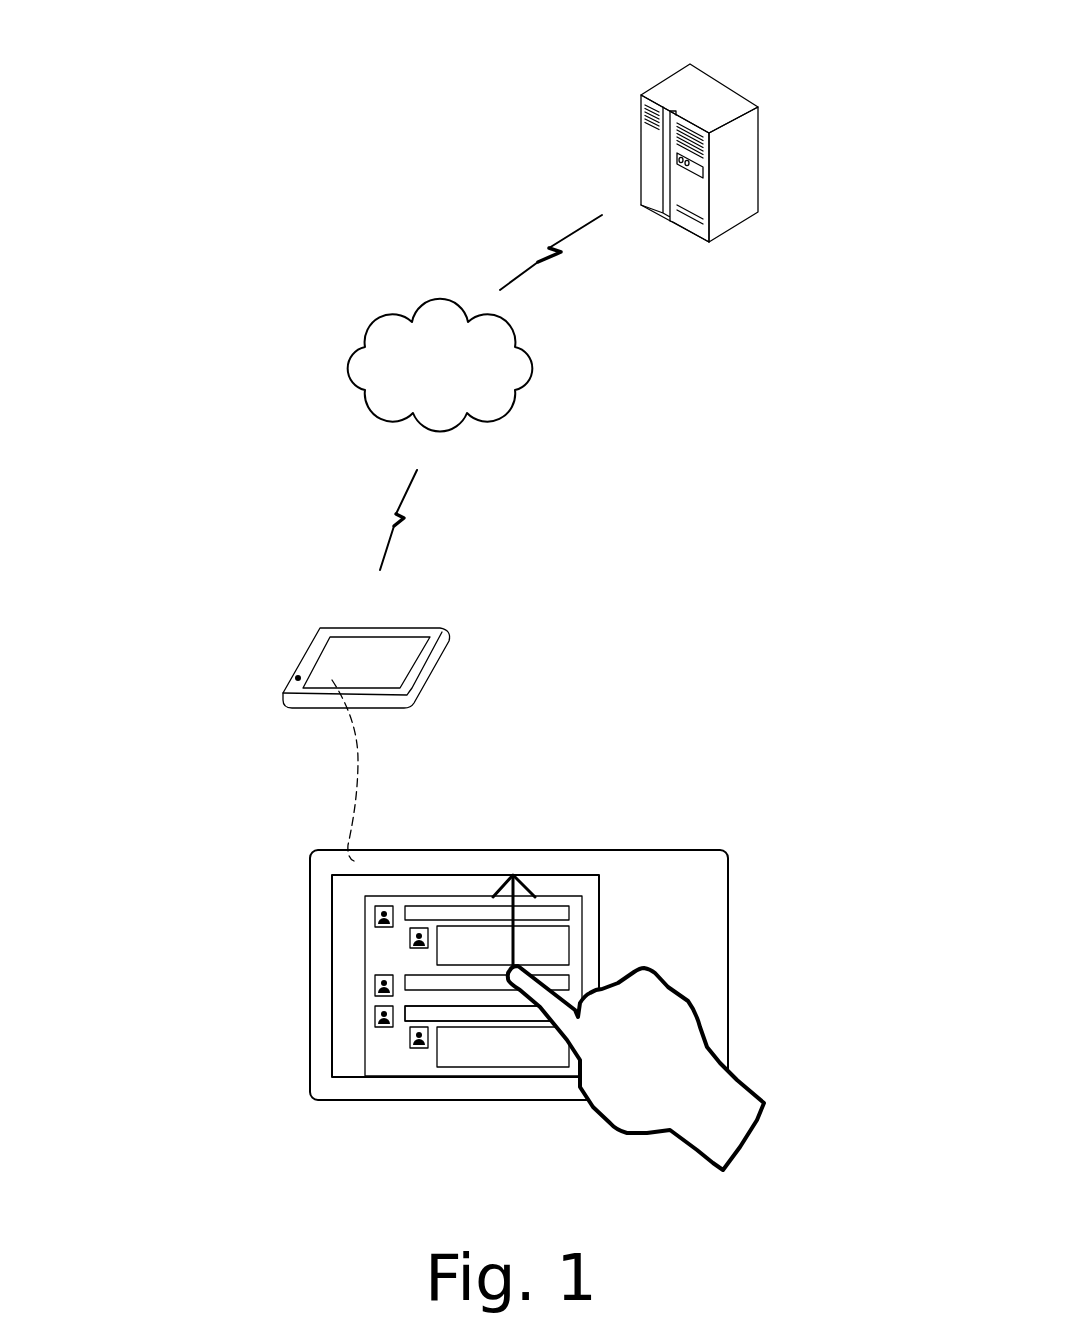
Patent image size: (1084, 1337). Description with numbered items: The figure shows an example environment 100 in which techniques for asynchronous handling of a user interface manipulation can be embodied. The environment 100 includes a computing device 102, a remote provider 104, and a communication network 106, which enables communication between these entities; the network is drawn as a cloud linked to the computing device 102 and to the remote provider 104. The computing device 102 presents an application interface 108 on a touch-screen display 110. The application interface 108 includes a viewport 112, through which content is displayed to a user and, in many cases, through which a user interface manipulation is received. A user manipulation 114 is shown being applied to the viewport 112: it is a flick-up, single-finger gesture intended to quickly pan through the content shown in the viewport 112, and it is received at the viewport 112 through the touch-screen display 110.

The environment 100 is at (206, 42).
The computing device 102 is at (423, 628).
The remote provider 104 is at (748, 95).
The communication network 106 is at (458, 381).
The application interface 108 is at (465, 875).
The touch-screen display 110 is at (708, 850).
The viewport 112 is at (562, 896).
The user manipulation 114 is at (497, 1009).